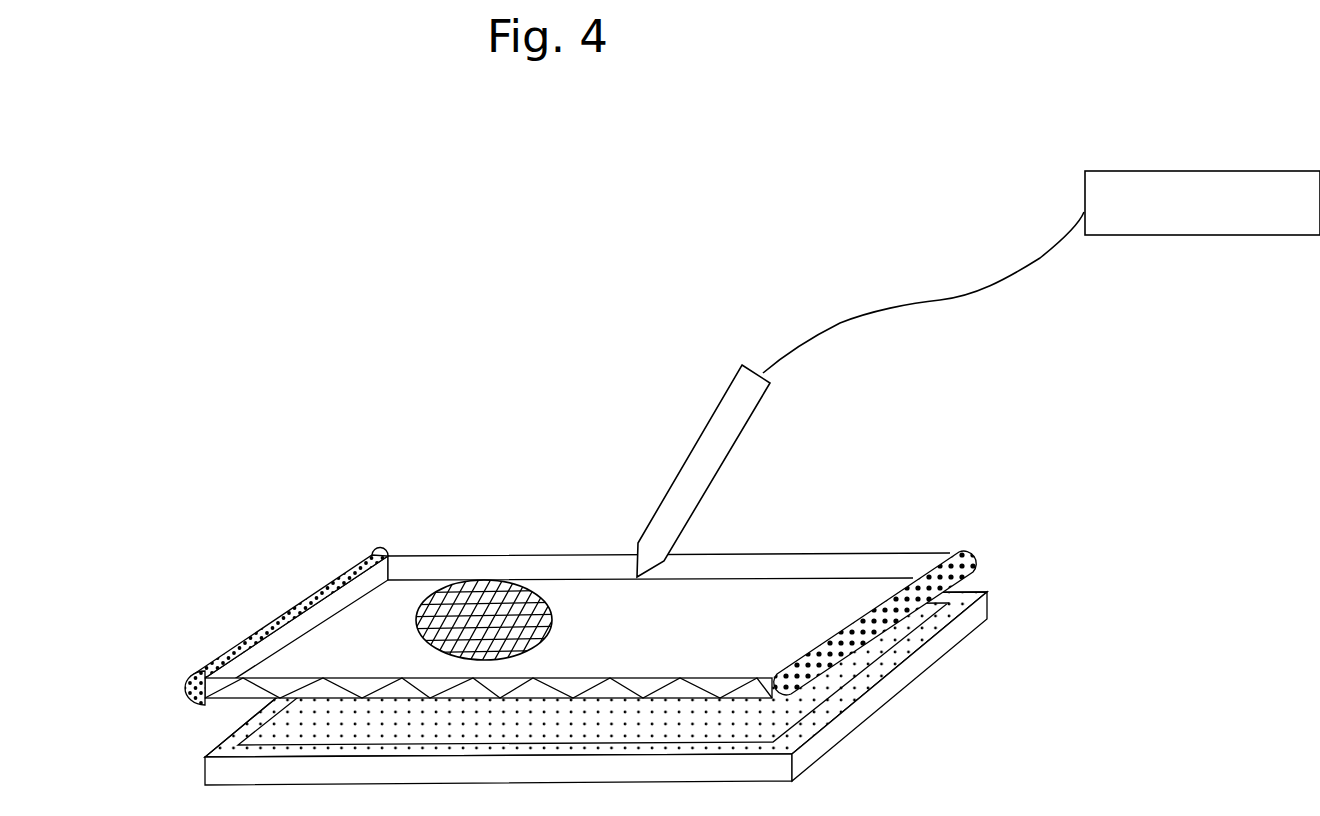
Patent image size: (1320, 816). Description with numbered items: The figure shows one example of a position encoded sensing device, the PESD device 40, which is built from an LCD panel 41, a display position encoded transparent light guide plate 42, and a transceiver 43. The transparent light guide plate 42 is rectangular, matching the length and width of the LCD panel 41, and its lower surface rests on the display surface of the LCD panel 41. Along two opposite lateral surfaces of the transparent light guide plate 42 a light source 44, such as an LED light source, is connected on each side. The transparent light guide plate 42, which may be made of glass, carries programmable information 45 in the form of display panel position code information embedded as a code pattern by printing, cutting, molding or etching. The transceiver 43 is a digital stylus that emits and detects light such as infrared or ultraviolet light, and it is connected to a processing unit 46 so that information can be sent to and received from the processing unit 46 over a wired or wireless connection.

The PESD device 40 is at (164, 302).
The LCD panel 41 is at (988, 612).
The transparent light guide plate 42 is at (862, 552).
The transceiver 43 is at (687, 462).
The light source 44 is at (183, 682).
The programmable information 45 is at (475, 580).
The processing unit 46 is at (1210, 171).